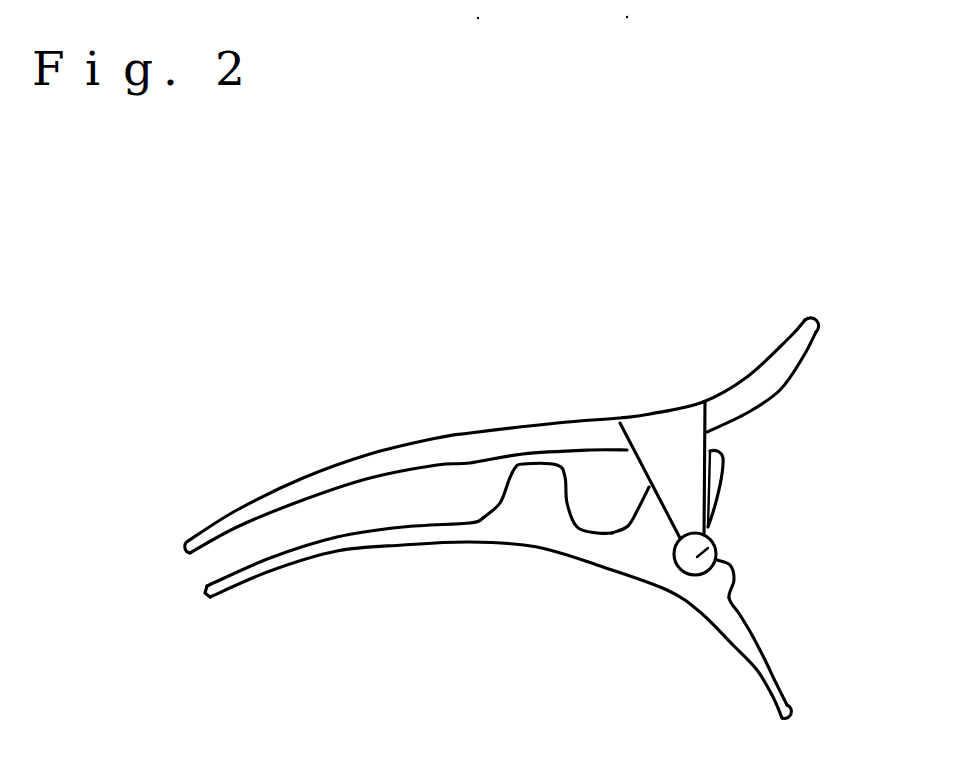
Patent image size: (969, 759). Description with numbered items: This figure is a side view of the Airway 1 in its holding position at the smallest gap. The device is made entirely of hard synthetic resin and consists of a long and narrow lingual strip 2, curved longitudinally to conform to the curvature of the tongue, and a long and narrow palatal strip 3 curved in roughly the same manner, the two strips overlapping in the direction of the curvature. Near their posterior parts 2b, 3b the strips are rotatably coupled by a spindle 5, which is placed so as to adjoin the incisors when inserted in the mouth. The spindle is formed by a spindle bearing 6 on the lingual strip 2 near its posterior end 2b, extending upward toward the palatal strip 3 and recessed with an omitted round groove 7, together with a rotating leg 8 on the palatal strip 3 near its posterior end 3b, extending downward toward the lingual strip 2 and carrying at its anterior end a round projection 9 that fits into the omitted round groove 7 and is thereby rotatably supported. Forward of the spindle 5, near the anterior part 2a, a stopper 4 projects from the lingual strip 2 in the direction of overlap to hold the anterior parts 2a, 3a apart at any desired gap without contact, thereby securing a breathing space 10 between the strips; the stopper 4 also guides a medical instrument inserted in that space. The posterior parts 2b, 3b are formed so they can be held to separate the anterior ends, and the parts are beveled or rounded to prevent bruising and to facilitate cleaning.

The Airway 1 is at (752, 277).
The lingual strip 2 is at (350, 545).
The anterior part of the lingual strip 2a is at (208, 597).
The posterior part of the lingual strip 2b is at (790, 710).
The palatal strip 3 is at (348, 477).
The anterior part of the palatal strip 3a is at (183, 545).
The posterior part of the palatal strip 3b is at (812, 326).
The stopper 4 is at (538, 480).
The spindle 5 is at (680, 555).
The spindle bearing 6 is at (658, 512).
The omitted round groove 7 is at (700, 577).
The rotating leg 8 is at (657, 450).
The round projection 9 is at (712, 553).
The breathing space 10 is at (722, 502).